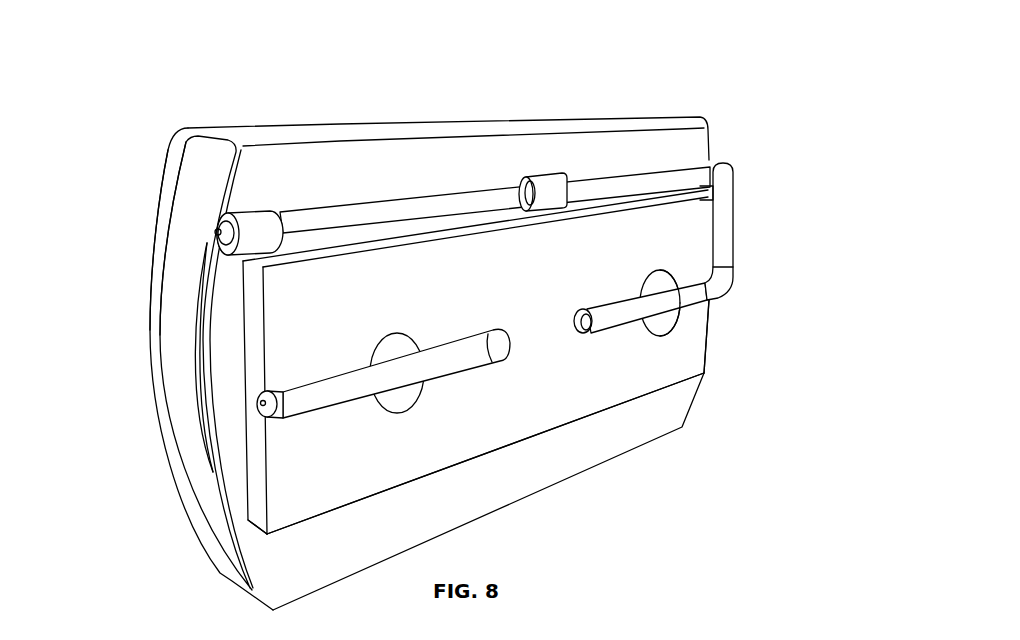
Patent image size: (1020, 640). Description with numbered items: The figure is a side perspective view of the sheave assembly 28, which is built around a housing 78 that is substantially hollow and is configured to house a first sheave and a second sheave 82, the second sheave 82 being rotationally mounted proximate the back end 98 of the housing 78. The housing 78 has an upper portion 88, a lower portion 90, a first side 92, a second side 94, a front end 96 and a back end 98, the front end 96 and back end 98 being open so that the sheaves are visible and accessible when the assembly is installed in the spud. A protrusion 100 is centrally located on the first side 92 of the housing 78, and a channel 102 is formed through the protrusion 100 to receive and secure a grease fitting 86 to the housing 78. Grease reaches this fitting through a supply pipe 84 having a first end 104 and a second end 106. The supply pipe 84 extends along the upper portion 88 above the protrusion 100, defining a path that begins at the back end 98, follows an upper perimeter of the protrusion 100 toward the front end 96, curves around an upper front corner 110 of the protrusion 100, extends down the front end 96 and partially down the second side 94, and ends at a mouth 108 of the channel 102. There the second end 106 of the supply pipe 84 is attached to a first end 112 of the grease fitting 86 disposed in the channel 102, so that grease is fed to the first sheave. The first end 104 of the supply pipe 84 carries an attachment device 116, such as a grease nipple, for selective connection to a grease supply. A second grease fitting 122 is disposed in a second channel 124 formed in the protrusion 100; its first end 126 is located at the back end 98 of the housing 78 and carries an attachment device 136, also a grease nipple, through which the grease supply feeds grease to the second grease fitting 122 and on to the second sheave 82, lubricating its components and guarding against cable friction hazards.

The sheave assembly 28 is at (197, 96).
The housing 78 is at (633, 140).
The second sheave 82 is at (185, 395).
The supply pipe 84 is at (428, 210).
The grease fitting 86 is at (700, 340).
The upper portion 88 is at (378, 162).
The lower portion 90 is at (547, 467).
The first side 92 is at (310, 455).
The second side 94 is at (185, 240).
The front end 96 is at (687, 237).
The back end 98 is at (232, 342).
The protrusion 100 is at (680, 363).
The channel 102 is at (600, 343).
The first end 104 is at (278, 220).
The second end 106 is at (727, 278).
The mouth 108 is at (698, 302).
The upper front corner 110 is at (716, 193).
The first end 112 is at (688, 297).
The attachment device 116 is at (214, 228).
The second grease fitting 122 is at (347, 398).
The second channel 124 is at (408, 408).
The first end 126 is at (267, 416).
The attachment device 136 is at (258, 405).